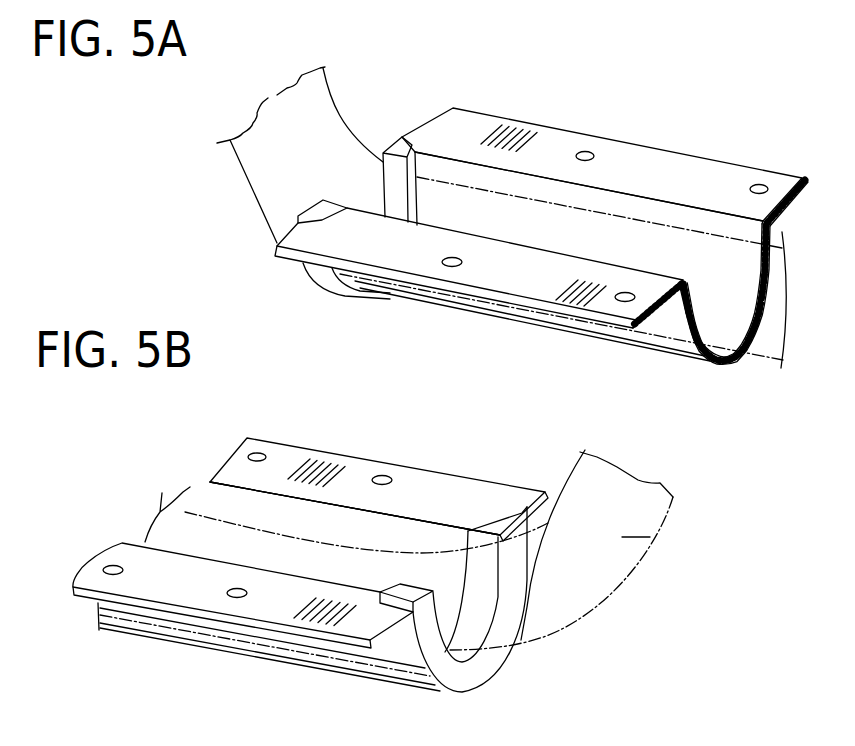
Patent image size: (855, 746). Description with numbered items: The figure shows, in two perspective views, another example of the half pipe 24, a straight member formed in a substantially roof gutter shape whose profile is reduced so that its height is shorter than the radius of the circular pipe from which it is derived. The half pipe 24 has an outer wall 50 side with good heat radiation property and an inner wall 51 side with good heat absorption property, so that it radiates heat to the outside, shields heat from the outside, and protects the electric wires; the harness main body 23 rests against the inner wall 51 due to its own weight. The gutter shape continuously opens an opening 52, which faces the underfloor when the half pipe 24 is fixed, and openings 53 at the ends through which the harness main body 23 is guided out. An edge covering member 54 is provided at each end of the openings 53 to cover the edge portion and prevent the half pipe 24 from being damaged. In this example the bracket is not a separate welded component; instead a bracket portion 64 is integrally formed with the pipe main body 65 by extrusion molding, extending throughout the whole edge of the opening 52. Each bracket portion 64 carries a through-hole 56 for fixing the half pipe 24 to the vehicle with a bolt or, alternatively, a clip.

In FIG. 5A, the harness main body 23 is at (262, 168).
In FIG. 5B, the harness main body 23 is at (647, 537).
In FIG. 5A, the half pipe 24 is at (543, 327).
In FIG. 5B, the half pipe 24 is at (323, 650).
In FIG. 5A, the outer wall 50 is at (597, 342).
In FIG. 5B, the outer wall 50 is at (203, 623).
In FIG. 5A, the inner wall 51 is at (610, 205).
In FIG. 5B, the inner wall 51 is at (257, 510).
In FIG. 5A, the opening 52 is at (473, 177).
In FIG. 5B, the opening 52 is at (408, 535).
In FIG. 5A, the opening 53 is at (385, 207).
In FIG. 5B, the opening 53 is at (505, 642).
In FIG. 5A, the edge covering member 54 is at (325, 287).
In FIG. 5B, the edge covering member 54 is at (477, 677).
In FIG. 5A, the through-hole 56 is at (585, 152).
In FIG. 5B, the through-hole 56 is at (257, 452).
In FIG. 5A, the bracket portion 64 is at (605, 157).
In FIG. 5B, the bracket portion 64 is at (413, 483).
In FIG. 5A, the pipe main body 65 is at (727, 325).
In FIG. 5B, the pipe main body 65 is at (345, 522).